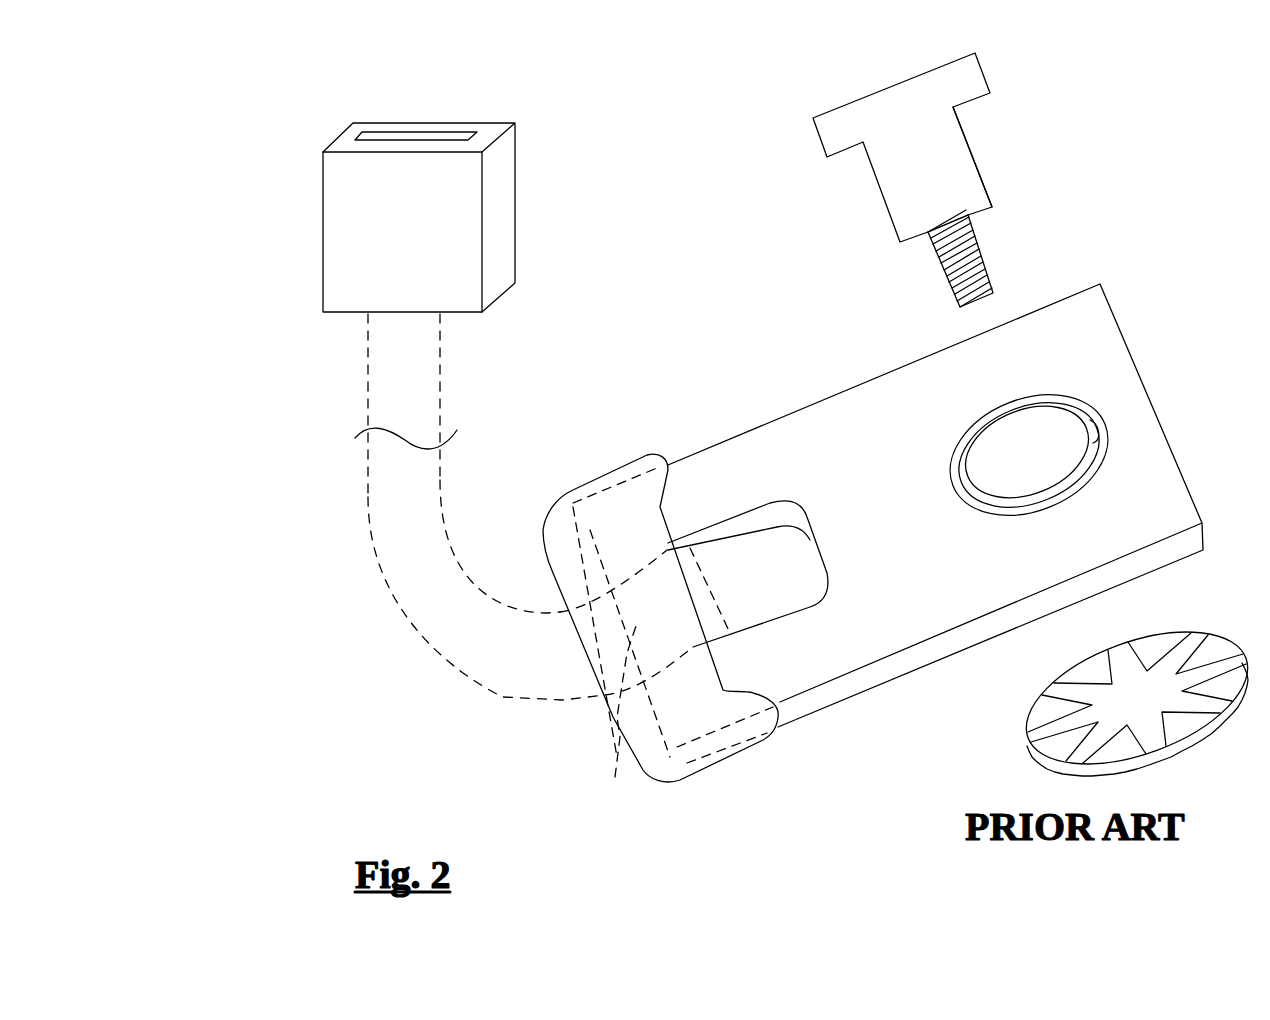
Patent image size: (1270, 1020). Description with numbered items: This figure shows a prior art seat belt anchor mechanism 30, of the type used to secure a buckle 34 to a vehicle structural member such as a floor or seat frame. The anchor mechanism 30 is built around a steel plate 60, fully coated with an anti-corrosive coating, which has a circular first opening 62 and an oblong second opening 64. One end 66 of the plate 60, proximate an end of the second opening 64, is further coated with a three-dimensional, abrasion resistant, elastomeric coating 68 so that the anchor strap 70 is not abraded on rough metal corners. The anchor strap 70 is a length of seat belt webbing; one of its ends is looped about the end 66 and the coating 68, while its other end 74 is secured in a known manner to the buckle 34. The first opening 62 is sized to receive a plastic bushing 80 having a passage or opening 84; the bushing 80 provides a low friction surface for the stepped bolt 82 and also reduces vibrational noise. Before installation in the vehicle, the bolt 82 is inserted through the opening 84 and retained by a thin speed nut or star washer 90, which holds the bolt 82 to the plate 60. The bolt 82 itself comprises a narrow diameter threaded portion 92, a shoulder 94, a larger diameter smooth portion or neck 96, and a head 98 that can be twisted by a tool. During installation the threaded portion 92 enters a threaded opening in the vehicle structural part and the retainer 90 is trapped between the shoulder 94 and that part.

The anchor mechanism 30 is at (502, 561).
The buckle 34 is at (370, 213).
The steel plate 60 is at (827, 428).
The circular first opening 62 is at (1060, 505).
The oblong second opening 64 is at (773, 617).
The end of the plate 66 is at (602, 715).
The elastomeric coating 68 is at (607, 470).
The anchor strap 70 is at (364, 594).
The other end of the strap 74 is at (388, 370).
The plastic bushing 80 is at (1053, 392).
The stepped bolt 82 is at (932, 161).
The passage or opening 84 is at (1087, 427).
The star washer 90 is at (1150, 635).
The threaded portion 92 is at (990, 267).
The shoulder 94 is at (977, 215).
The smooth portion or neck 96 is at (977, 160).
The head 98 is at (990, 74).